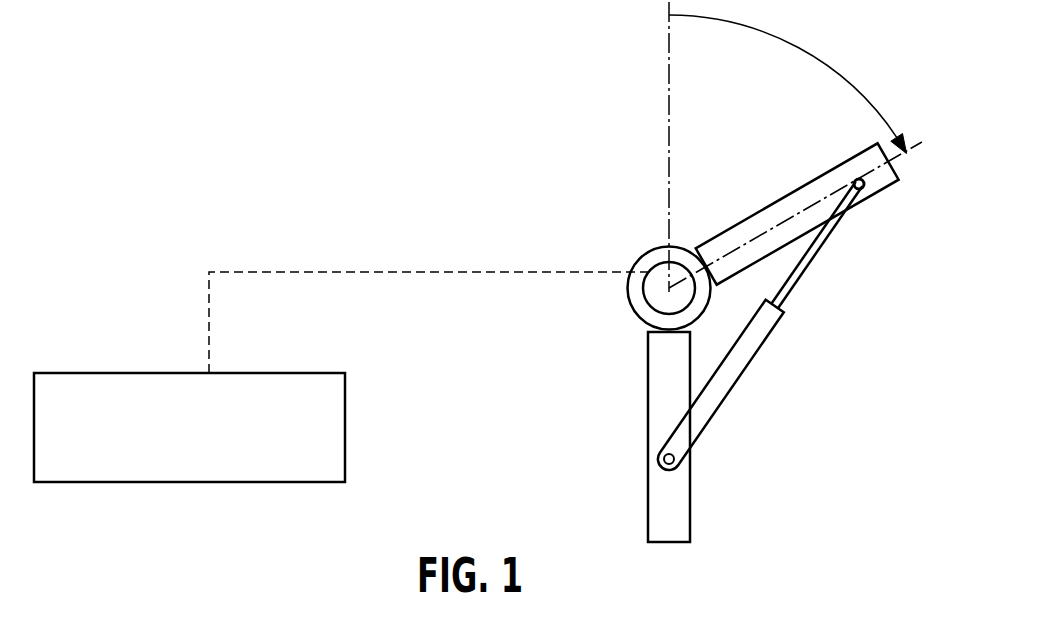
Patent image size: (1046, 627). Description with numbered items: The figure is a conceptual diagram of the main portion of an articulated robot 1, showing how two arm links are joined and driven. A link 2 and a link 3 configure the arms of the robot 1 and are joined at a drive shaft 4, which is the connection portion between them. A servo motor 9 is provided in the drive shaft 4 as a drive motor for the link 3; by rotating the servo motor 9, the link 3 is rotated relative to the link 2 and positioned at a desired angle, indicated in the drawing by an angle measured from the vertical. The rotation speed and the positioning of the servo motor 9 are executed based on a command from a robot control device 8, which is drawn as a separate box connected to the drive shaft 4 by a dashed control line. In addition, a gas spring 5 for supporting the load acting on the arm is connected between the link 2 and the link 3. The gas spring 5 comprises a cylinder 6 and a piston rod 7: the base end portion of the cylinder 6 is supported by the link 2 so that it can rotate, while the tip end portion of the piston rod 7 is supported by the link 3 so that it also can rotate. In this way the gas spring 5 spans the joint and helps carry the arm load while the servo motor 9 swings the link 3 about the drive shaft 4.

The robot 1 is at (568, 170).
The link 2 is at (660, 412).
The link 3 is at (797, 216).
The drive shaft 4 is at (653, 258).
The gas spring 5 is at (797, 375).
The cylinder 6 is at (720, 390).
The piston rod 7 is at (813, 252).
The robot control device 8 is at (142, 395).
The servo motor 9 is at (657, 293).